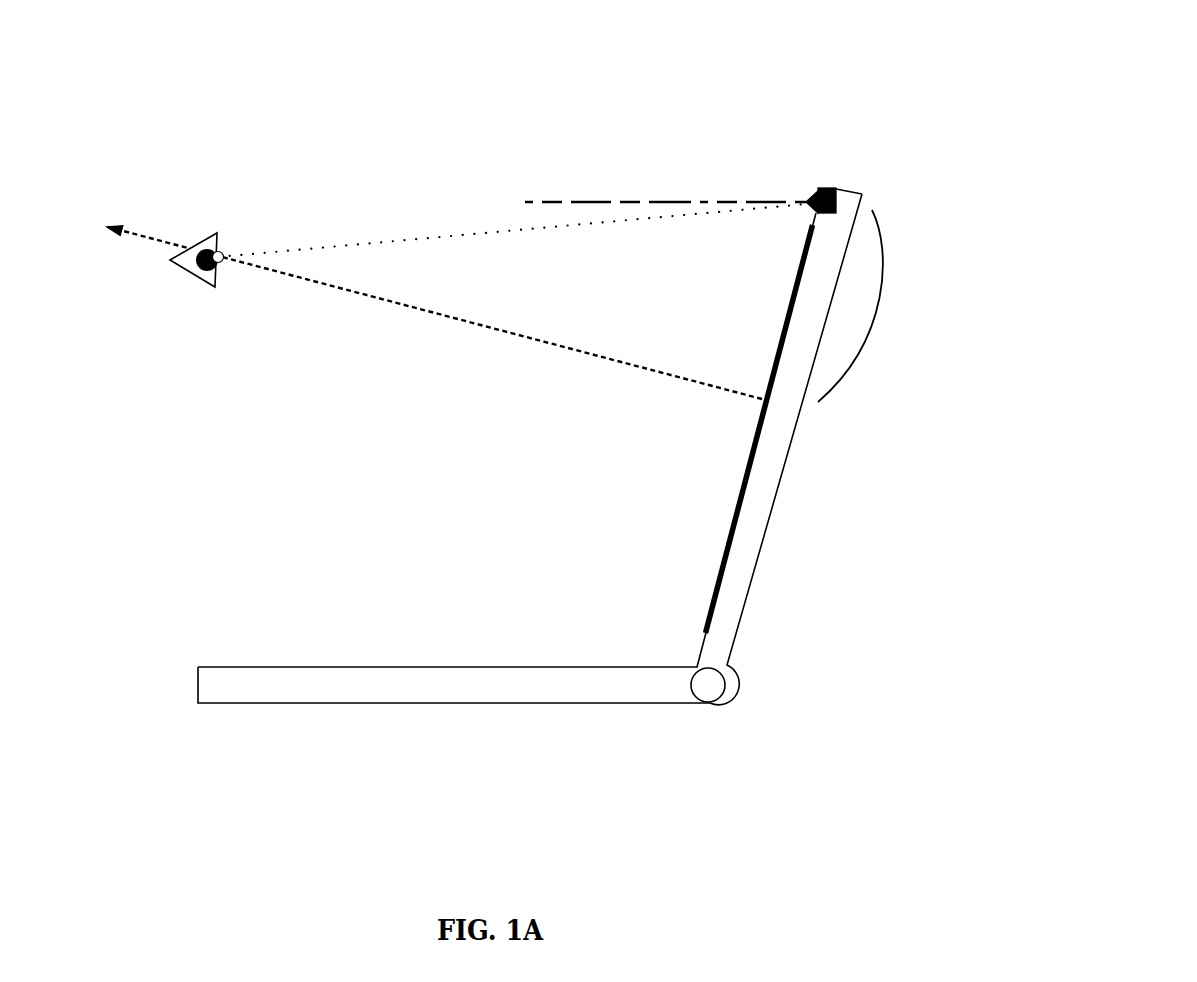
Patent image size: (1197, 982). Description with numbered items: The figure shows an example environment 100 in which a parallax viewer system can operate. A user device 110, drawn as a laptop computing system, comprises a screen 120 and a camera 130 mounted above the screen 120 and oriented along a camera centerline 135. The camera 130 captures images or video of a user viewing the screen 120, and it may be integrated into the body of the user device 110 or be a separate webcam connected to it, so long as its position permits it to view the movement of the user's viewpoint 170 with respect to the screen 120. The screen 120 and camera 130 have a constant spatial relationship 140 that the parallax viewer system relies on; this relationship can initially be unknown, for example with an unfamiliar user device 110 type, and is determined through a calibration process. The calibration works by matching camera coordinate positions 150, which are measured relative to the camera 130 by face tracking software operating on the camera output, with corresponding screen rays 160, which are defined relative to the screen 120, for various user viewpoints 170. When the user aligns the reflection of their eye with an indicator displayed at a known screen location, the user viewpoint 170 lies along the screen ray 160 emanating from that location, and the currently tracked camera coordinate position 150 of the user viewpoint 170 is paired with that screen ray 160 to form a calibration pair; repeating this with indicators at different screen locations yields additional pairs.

The environment 100 is at (619, 364).
The user device 110 is at (215, 685).
The screen 120 is at (708, 610).
The camera 130 is at (845, 193).
The camera centerline 135 is at (665, 149).
The spatial relationship 140 is at (877, 309).
The camera coordinate position 150 is at (178, 292).
The screen ray 160 is at (376, 300).
The user viewpoint 170 is at (148, 300).